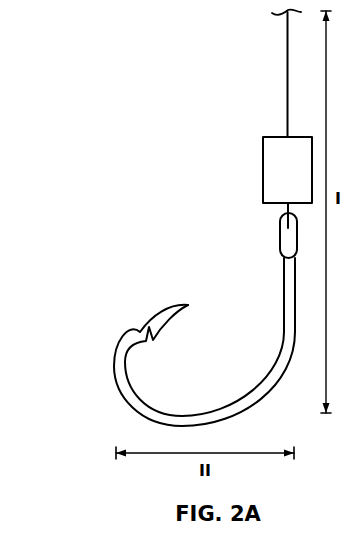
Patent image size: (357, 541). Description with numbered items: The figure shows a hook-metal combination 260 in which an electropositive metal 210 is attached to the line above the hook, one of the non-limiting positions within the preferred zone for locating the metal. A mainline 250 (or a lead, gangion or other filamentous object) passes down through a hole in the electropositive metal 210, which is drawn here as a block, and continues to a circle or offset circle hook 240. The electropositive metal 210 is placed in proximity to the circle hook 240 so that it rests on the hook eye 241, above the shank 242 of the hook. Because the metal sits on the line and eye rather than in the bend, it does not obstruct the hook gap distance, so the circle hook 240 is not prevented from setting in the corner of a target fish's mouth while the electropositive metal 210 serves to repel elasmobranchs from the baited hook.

The hook-metal combination 260 is at (212, 43).
The mainline 250 is at (287, 107).
The electropositive metal 210 is at (263, 170).
The hook eye 241 is at (280, 235).
The shank 242 is at (283, 290).
The circle hook 240 is at (117, 391).